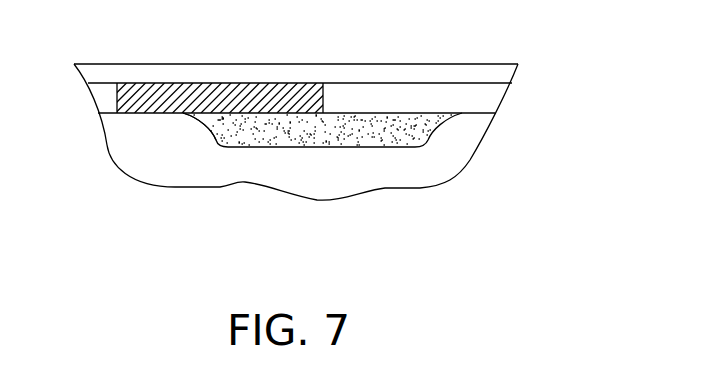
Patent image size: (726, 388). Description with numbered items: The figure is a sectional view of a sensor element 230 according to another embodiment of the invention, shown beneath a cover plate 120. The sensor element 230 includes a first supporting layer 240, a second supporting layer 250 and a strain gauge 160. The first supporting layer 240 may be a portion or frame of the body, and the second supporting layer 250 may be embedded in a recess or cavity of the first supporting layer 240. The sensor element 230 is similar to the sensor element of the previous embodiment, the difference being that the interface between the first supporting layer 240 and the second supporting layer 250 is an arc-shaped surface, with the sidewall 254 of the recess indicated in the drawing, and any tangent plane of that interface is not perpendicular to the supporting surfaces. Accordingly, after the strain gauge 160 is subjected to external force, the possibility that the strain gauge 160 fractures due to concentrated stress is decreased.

The cover plate 120 is at (503, 74).
The strain gauge 160 is at (218, 93).
The sensor element 230 is at (579, 195).
The first supporting layer 240 is at (122, 147).
The second supporting layer 250 is at (423, 132).
The recess sidewall 254 is at (213, 132).